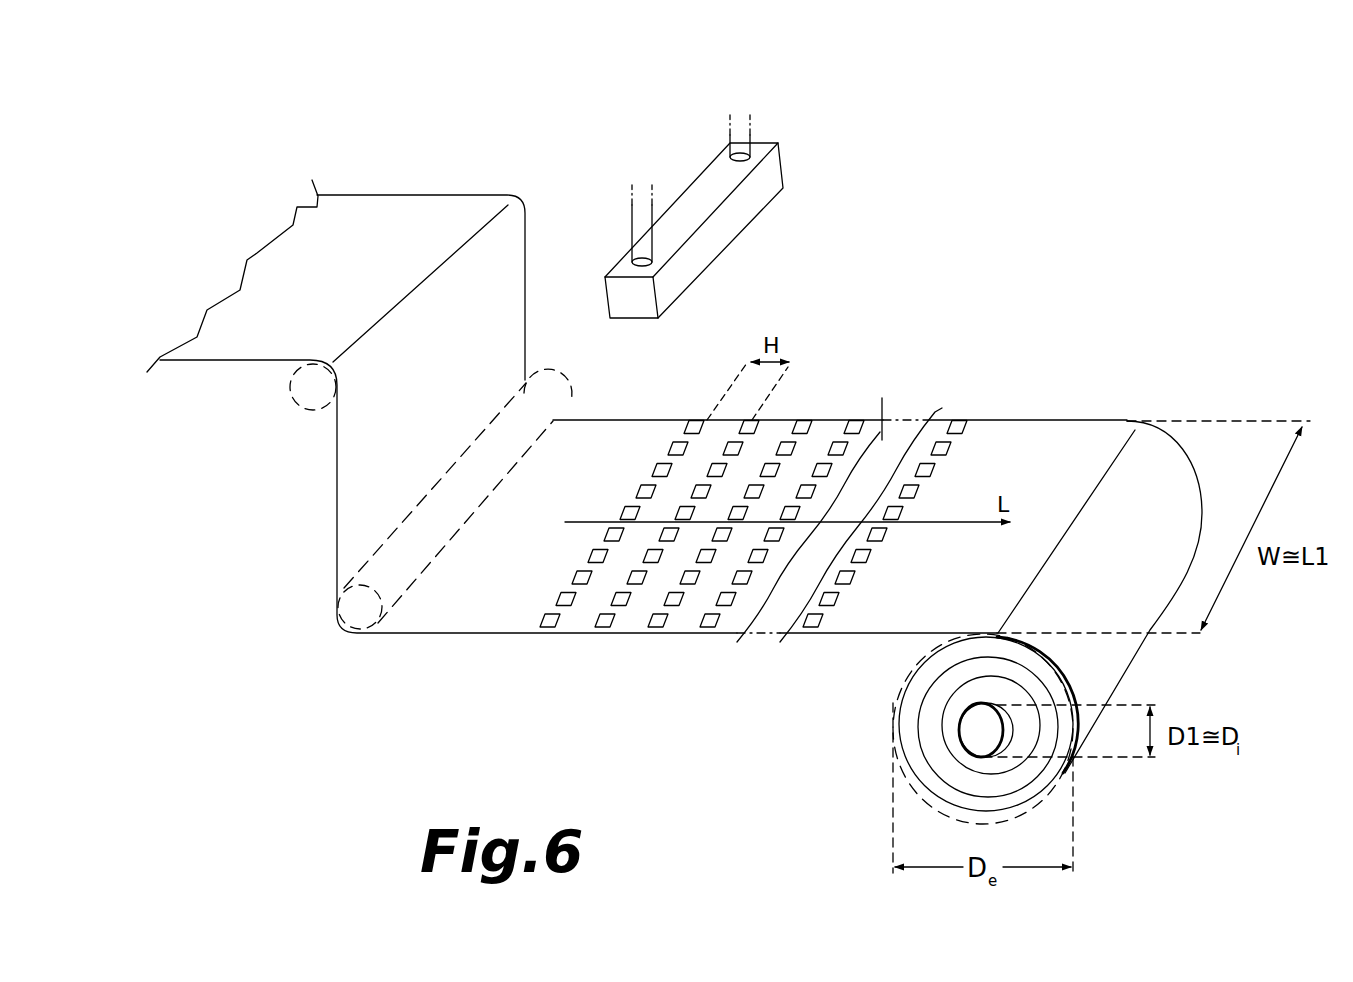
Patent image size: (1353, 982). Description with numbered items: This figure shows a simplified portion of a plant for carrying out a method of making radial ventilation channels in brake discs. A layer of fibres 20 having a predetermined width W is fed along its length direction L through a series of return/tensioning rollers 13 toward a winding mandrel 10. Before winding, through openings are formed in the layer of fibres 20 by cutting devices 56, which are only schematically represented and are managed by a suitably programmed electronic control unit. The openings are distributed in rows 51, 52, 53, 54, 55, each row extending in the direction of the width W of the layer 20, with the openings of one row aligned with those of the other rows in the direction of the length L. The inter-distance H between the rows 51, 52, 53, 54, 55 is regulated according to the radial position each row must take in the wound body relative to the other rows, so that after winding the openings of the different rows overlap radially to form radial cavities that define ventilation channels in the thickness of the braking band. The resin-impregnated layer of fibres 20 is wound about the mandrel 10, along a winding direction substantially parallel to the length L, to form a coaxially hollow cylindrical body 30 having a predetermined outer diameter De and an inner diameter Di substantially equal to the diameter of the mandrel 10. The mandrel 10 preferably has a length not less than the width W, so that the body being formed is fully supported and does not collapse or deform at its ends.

The layer of fibres 20 is at (362, 215).
The return/tensioning rollers 13 is at (303, 392).
The cutting devices 56 is at (768, 177).
The row of openings 51 is at (542, 634).
The row of openings 52 is at (598, 634).
The row of openings 53 is at (650, 634).
The row of openings 54 is at (703, 634).
The row of openings 55 is at (803, 634).
The coaxially hollow cylindrical body 30 is at (1045, 797).
The mandrel 10 is at (975, 732).